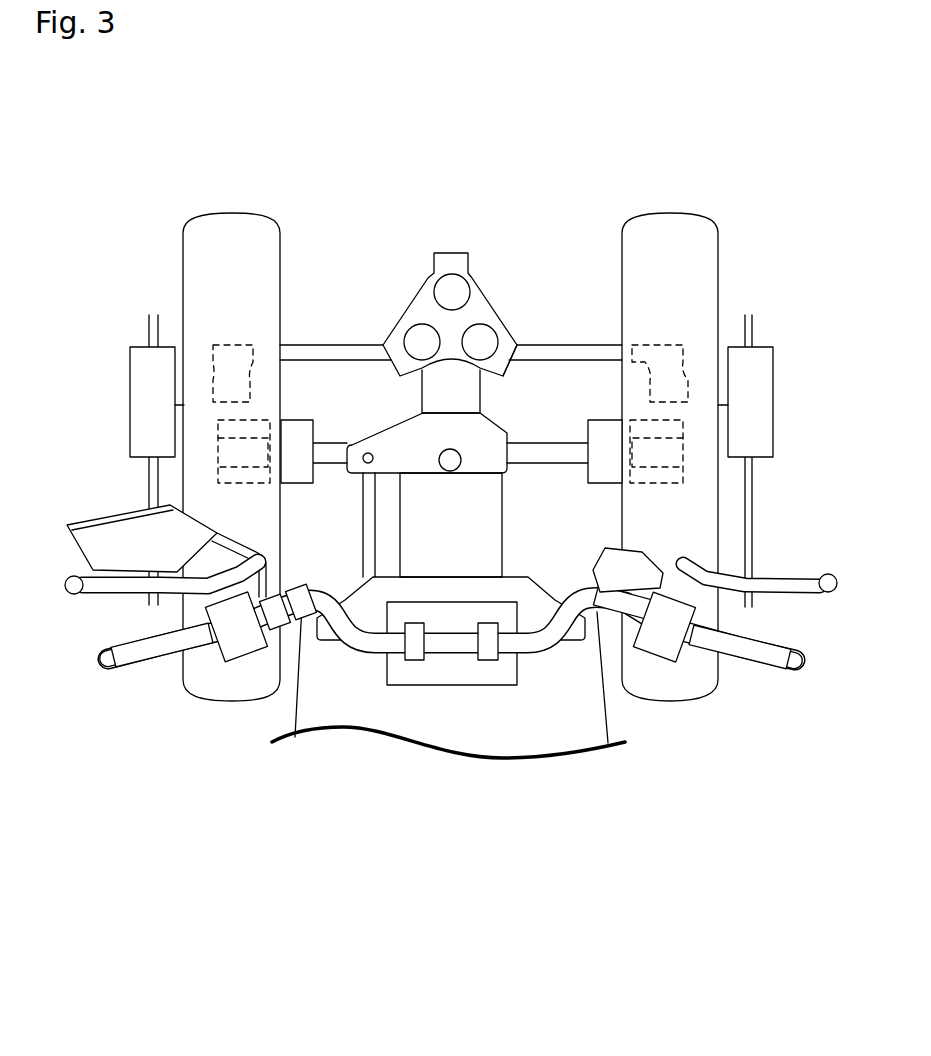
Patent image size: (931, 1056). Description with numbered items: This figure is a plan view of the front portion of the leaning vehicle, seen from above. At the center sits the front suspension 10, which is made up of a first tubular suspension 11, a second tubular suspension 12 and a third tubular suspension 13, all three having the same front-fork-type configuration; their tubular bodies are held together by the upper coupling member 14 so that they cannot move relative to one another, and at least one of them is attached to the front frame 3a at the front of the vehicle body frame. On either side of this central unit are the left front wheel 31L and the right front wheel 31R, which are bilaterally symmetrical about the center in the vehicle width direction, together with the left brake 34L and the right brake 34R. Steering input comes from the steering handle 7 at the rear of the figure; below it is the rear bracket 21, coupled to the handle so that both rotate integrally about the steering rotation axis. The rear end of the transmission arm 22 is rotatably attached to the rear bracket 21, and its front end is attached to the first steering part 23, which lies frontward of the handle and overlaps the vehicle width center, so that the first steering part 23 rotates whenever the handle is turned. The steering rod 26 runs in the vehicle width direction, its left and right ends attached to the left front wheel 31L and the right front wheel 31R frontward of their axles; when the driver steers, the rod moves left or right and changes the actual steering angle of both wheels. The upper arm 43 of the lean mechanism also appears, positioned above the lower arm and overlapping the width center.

The front frame 3a is at (490, 517).
The steering handle 7 is at (422, 723).
The front suspension 10 is at (457, 203).
The first tubular suspension 11 is at (445, 290).
The second tubular suspension 12 is at (415, 337).
The third tubular suspension 13 is at (487, 337).
The upper coupling member 14 is at (508, 347).
The rear bracket 21 is at (357, 597).
The transmission arm 22 is at (363, 497).
The first steering part 23 is at (410, 420).
The steering rod 26 is at (315, 353).
The left front wheel 31L is at (235, 207).
The right front wheel 31R is at (670, 207).
The left brake 34L is at (130, 333).
The right brake 34R is at (770, 333).
The upper arm 43 is at (542, 445).